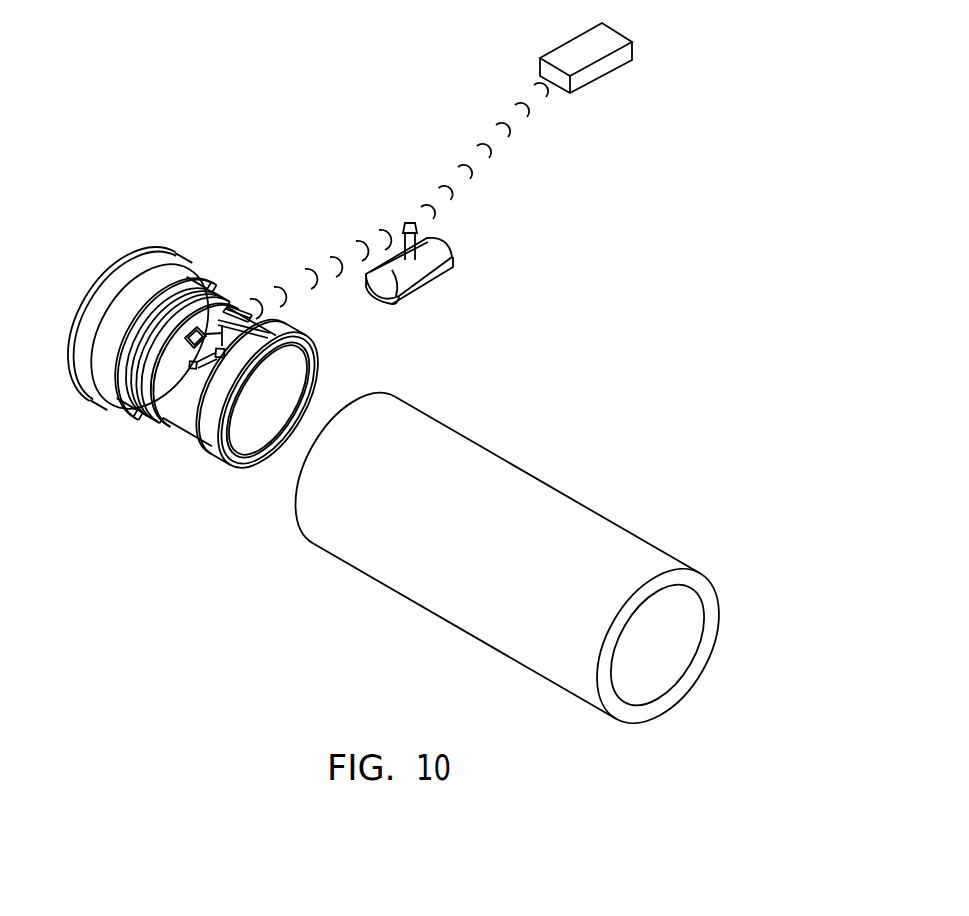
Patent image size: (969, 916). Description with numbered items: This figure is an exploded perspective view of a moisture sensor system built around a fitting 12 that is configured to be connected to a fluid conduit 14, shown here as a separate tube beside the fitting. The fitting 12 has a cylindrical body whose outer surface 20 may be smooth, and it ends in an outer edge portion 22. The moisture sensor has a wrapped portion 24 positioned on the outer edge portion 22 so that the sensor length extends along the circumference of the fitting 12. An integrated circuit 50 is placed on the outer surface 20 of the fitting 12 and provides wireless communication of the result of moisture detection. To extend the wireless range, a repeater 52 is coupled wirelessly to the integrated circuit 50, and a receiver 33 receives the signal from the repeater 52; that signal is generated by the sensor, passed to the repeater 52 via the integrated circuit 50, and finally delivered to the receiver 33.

The fitting 12 is at (79, 285).
The fluid conduit 14 is at (507, 446).
The outer surface 20 is at (182, 412).
The outer edge portion 22 is at (218, 438).
The wrapped portion 24 is at (285, 320).
The integrated circuit 50 is at (225, 316).
The repeater 52 is at (443, 240).
The receiver 33 is at (580, 43).